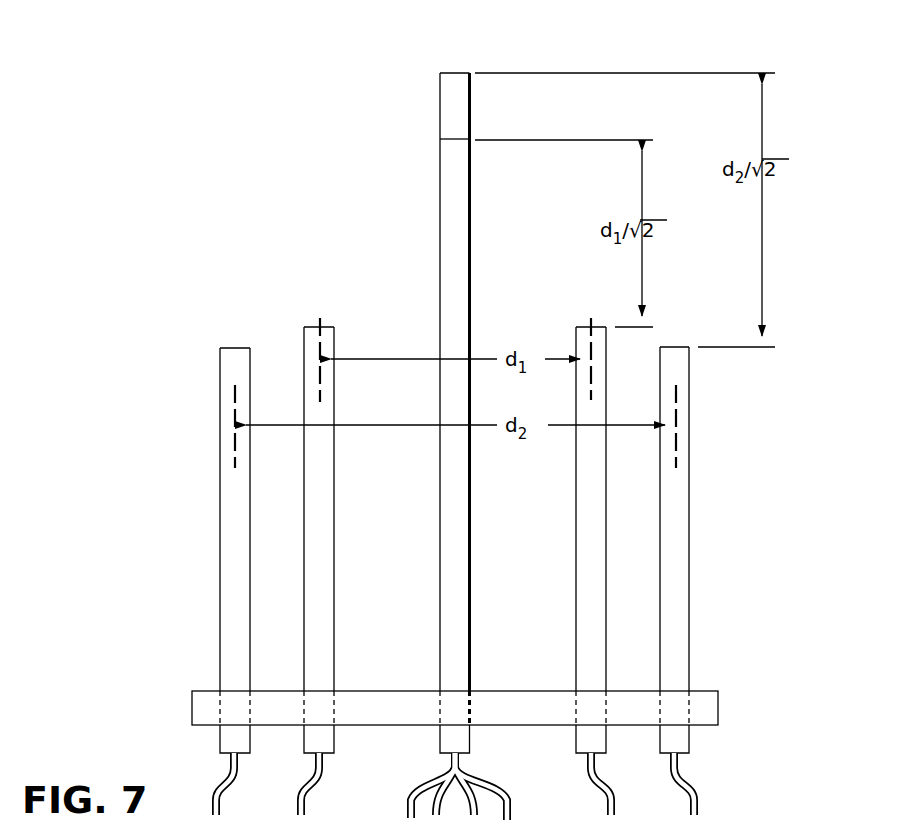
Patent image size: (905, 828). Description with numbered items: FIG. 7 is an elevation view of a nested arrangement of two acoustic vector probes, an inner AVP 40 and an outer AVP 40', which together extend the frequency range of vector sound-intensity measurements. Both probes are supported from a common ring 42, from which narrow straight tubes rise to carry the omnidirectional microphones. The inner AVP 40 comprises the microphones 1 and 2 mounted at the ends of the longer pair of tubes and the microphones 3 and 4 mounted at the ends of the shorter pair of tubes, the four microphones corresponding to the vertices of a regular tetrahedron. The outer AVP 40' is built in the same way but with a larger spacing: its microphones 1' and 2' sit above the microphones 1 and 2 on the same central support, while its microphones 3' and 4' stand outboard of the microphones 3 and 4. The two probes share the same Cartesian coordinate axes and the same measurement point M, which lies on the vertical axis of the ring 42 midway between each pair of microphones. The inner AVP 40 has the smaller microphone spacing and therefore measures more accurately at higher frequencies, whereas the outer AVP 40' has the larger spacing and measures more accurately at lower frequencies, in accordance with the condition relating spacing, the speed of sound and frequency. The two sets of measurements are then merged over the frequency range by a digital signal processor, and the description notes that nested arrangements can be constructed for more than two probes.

The omnidirectional microphone 1 is at (465, 424).
The omnidirectional microphone 2 is at (465, 424).
The omnidirectional microphone of outer AVP 1' is at (465, 424).
The omnidirectional microphone of outer AVP 2' is at (465, 424).
The measurement point M is at (461, 424).
The omnidirectional microphone 3 is at (286, 548).
The omnidirectional microphone of outer AVP 3' is at (202, 558).
The omnidirectional microphone 4 is at (563, 551).
The omnidirectional microphone of outer AVP 4' is at (701, 562).
The inner AVP 40 is at (254, 370).
The outer AVP 40' is at (167, 439).
The ring 42 is at (205, 691).